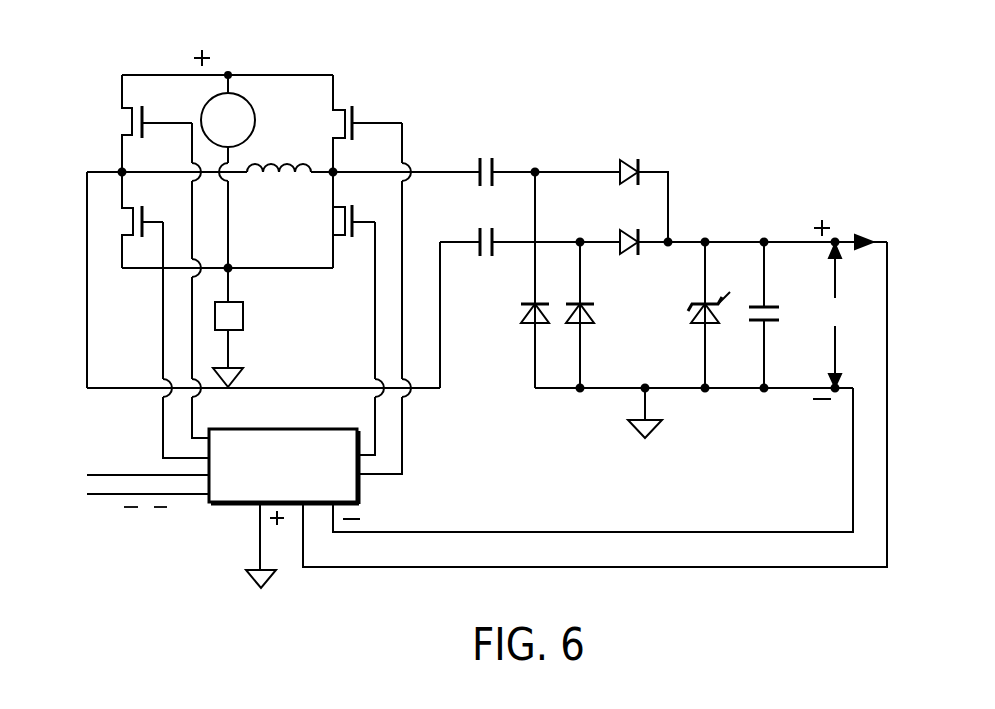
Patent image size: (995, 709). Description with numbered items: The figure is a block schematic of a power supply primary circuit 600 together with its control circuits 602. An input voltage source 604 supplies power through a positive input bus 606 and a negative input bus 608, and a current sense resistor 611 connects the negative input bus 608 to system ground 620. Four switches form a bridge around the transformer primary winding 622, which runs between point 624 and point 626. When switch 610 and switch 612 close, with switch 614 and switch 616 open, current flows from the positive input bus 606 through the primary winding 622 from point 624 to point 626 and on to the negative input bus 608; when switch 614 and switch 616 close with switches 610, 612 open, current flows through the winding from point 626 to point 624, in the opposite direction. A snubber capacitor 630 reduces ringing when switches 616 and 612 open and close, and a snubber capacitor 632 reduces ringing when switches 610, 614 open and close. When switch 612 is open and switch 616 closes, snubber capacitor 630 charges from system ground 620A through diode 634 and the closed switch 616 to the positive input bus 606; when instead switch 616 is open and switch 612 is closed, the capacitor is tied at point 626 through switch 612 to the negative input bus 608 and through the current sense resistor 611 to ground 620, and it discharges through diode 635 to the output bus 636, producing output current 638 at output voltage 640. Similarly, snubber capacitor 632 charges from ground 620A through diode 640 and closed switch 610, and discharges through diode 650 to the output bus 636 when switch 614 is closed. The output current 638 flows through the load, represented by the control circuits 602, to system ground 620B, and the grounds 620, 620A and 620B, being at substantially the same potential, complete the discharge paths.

The primary circuit 600 is at (578, 73).
The control circuits 602 is at (209, 504).
The input voltage source 604 is at (211, 102).
The positive input bus 606 is at (138, 75).
The negative input bus 608 is at (140, 270).
The switch 610 is at (121, 122).
The current sense resistor 611 is at (243, 302).
The switch 612 is at (337, 222).
The switch 614 is at (130, 210).
The switch 616 is at (346, 110).
The system ground 620 is at (242, 382).
The system ground 620A is at (628, 422).
The system ground 620B is at (248, 569).
The transformer primary winding 622 is at (300, 147).
The point 624 is at (117, 170).
The point 626 is at (338, 178).
The snubber capacitor 630 is at (474, 186).
The snubber capacitor 632 is at (476, 256).
The diode 634 is at (520, 319).
The diode 635 is at (618, 176).
The output bus 636 is at (777, 238).
The output current 638 is at (860, 212).
The diode / output voltage 640 is at (596, 320).
The diode 650 is at (632, 248).